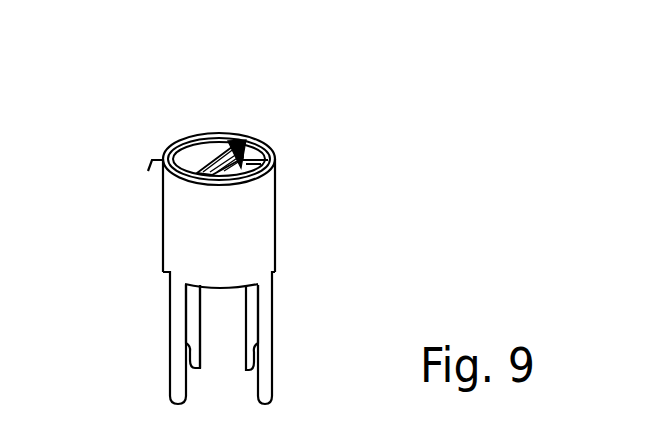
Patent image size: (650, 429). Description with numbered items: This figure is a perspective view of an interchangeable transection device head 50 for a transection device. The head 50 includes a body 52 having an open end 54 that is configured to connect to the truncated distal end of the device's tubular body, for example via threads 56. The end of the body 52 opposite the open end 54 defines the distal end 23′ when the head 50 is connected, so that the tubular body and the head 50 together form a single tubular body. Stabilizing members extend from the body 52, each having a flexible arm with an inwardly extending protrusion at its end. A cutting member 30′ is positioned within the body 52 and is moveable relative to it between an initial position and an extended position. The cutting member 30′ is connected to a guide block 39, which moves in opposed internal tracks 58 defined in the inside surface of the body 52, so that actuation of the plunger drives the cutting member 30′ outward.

The interchangeable transection device head 50 is at (103, 118).
The body 52 is at (260, 213).
The open end 54 is at (187, 140).
The threads 56 is at (148, 171).
The internal tracks 58 is at (226, 139).
The guide block 39 is at (260, 138).
The cutting member 30′ is at (278, 163).
The distal end 23′ is at (167, 279).